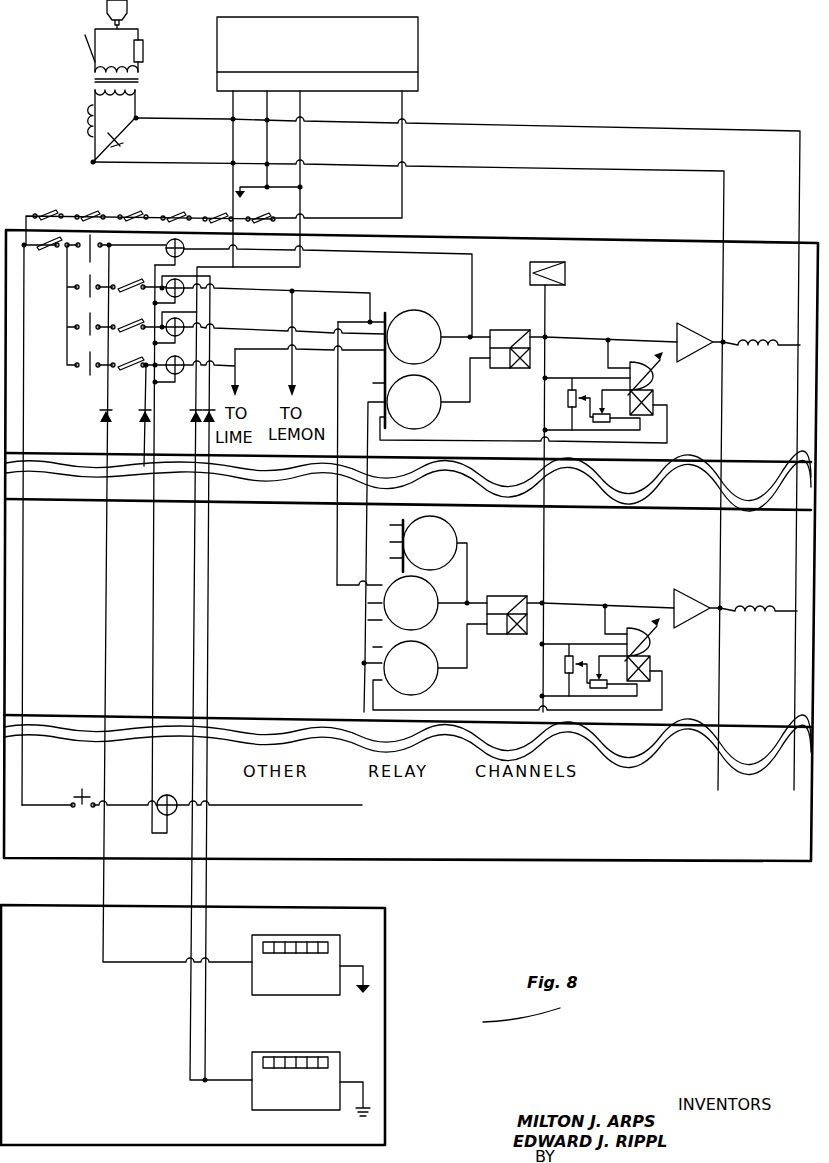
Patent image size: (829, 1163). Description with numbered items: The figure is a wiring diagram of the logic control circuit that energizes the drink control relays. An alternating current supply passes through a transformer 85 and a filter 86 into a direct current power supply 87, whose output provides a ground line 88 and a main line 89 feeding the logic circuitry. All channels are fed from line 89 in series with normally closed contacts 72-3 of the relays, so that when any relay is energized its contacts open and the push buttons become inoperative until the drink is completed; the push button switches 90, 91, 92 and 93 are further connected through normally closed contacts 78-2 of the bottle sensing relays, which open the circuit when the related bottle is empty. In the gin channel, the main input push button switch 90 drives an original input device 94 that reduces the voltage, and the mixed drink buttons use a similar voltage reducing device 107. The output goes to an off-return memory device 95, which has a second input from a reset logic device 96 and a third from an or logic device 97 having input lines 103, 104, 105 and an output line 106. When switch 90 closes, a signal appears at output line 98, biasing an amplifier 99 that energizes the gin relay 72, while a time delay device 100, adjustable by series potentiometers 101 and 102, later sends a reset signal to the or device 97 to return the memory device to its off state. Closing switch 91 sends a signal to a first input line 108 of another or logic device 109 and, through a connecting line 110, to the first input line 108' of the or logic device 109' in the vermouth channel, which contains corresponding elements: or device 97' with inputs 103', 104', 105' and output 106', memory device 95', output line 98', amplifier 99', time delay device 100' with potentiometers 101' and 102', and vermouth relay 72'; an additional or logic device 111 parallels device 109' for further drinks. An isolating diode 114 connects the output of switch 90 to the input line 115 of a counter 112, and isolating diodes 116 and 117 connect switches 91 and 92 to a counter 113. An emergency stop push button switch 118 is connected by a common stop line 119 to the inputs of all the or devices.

The transformer 85 is at (94, 80).
The filter 86 is at (88, 153).
The direct current power supply 87 is at (216, 28).
The ground line 88 is at (307, 141).
The 125 volt line 89 is at (407, 143).
The contacts of relays 72 72-3 is at (173, 212).
The normally closed contacts of sensing relay 78 78-2 is at (121, 303).
The main input push button switch 90 is at (90, 262).
The push button switch 91 is at (86, 296).
The push button switch 92 is at (88, 333).
The push button switch 93 is at (88, 373).
The original input device 94 is at (186, 252).
The voltage reducing device 107 is at (186, 298).
The isolating diode 114 is at (102, 412).
The isolating diode 116 is at (192, 412).
The isolating diode 117 is at (207, 421).
The first input line of or logic device 109 108 is at (372, 349).
The or logic device 109 is at (438, 323).
The connecting line 110 is at (337, 370).
The input line of or logic device 97 103 is at (366, 370).
The input line of or logic device 97 104 is at (364, 546).
The input line of or logic device 97 105 is at (502, 424).
The output line of or logic device 97 106 is at (465, 397).
The or logic device 97 is at (446, 402).
The off-return memory device 95 is at (516, 332).
The reset logic device 96 is at (566, 273).
The output line 98 is at (610, 337).
The amplifier 99 is at (700, 325).
The time delay device 100 is at (672, 383).
The potentiometer 101 is at (587, 392).
The potentiometer 102 is at (592, 426).
The relay 72 is at (761, 323).
The or logic device 111 is at (458, 532).
The first input line of or logic device 109' 108' is at (351, 600).
The or logic device 109' is at (449, 590).
The input line of or logic device 97' 103' is at (350, 639).
The input line of or logic device 97' 104' is at (350, 659).
The input line of or logic device 97' 105' is at (490, 690).
The output line of or logic device 97' 106' is at (486, 652).
The or logic device 97' is at (433, 673).
The off-return memory device 95' is at (514, 600).
The output line 98' is at (607, 603).
The amplifier 99' is at (698, 592).
The time delay device 100' is at (670, 649).
The potentiometer 101' is at (584, 657).
The potentiometer 102' is at (623, 686).
The relay 72' is at (758, 591).
The emergency stop push button switch 118 is at (80, 806).
The common stop line 119 is at (179, 809).
The counter 112 is at (300, 934).
The counter 113 is at (262, 1100).
The input line of counter 112 115 is at (245, 928).